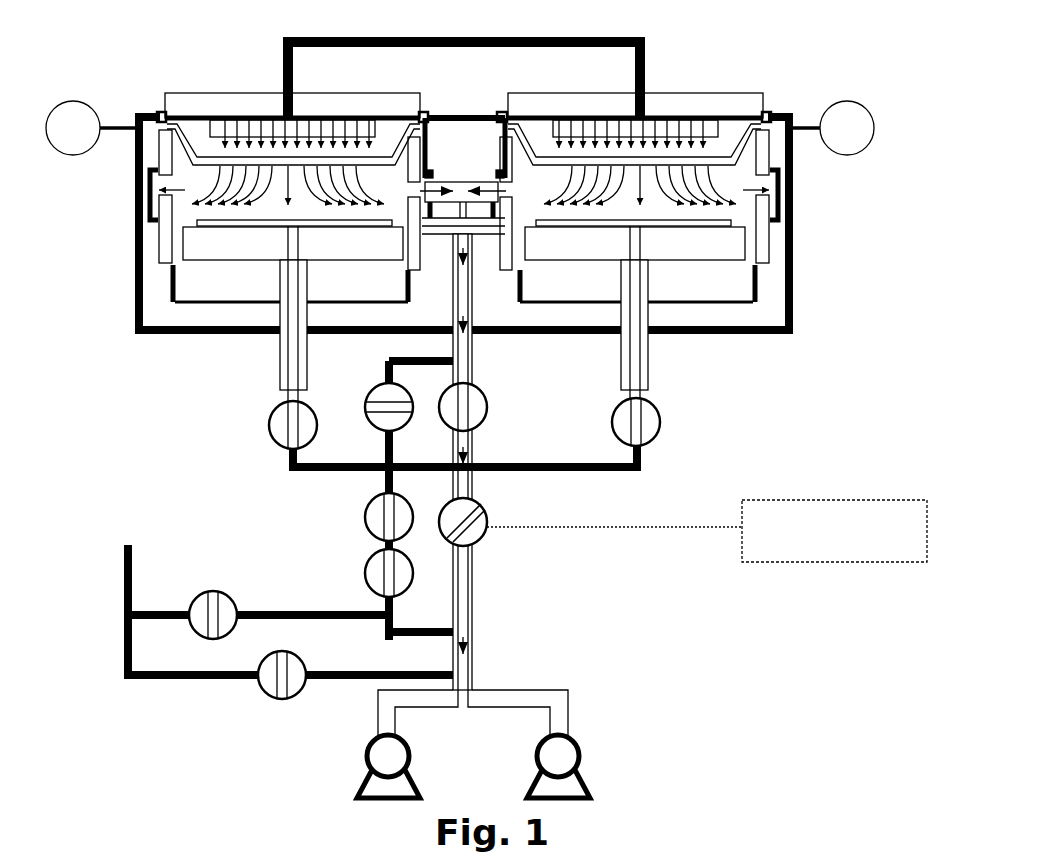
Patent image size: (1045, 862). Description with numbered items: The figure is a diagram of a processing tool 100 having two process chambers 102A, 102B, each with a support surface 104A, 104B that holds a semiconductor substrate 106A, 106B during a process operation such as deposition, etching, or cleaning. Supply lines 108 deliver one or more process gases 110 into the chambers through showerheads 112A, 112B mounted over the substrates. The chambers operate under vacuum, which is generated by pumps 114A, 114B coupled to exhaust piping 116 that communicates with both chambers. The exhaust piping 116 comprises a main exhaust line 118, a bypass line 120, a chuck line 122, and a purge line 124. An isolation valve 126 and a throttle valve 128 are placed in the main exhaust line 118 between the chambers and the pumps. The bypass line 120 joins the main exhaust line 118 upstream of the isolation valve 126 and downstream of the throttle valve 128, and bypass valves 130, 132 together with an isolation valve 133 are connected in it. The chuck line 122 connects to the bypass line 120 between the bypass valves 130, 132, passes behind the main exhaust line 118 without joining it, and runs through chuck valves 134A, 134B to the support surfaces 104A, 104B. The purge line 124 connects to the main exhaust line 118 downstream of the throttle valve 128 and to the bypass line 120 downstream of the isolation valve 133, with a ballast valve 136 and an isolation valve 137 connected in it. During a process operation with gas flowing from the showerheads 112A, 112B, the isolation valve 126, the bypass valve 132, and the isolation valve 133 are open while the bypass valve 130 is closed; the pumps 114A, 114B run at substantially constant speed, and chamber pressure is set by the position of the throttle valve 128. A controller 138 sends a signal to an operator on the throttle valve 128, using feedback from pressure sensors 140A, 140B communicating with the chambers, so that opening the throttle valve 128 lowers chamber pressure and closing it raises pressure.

The processing tool 100 is at (136, 32).
The process chamber 102A is at (200, 290).
The process chamber 102B is at (735, 290).
The support surface 104A is at (200, 244).
The support surface 104B is at (730, 244).
The semiconductor substrate 106A is at (196, 222).
The semiconductor substrate 106B is at (734, 222).
The supply lines 108 is at (282, 60).
The process gases 110 is at (218, 183).
The showerhead 112A is at (197, 108).
The showerhead 112B is at (726, 110).
The pump 114A is at (380, 755).
The pump 114B is at (565, 757).
The exhaust piping 116 is at (730, 583).
The main exhaust line 118 is at (467, 343).
The bypass line 120 is at (330, 473).
The chuck line 122 is at (615, 472).
The purge line 124 is at (133, 552).
The isolation valve 126 is at (478, 415).
The throttle valve 128 is at (485, 508).
The bypass valve 130 is at (375, 400).
The bypass valve 132 is at (372, 522).
The isolation valve 133 is at (370, 580).
The chuck valve 134A is at (278, 430).
The chuck valve 134B is at (652, 432).
The ballast valve 136 is at (225, 628).
The isolation valve 137 is at (270, 688).
The controller 138 is at (835, 500).
The pressure sensor 140A is at (70, 100).
The pressure sensor 140B is at (850, 100).